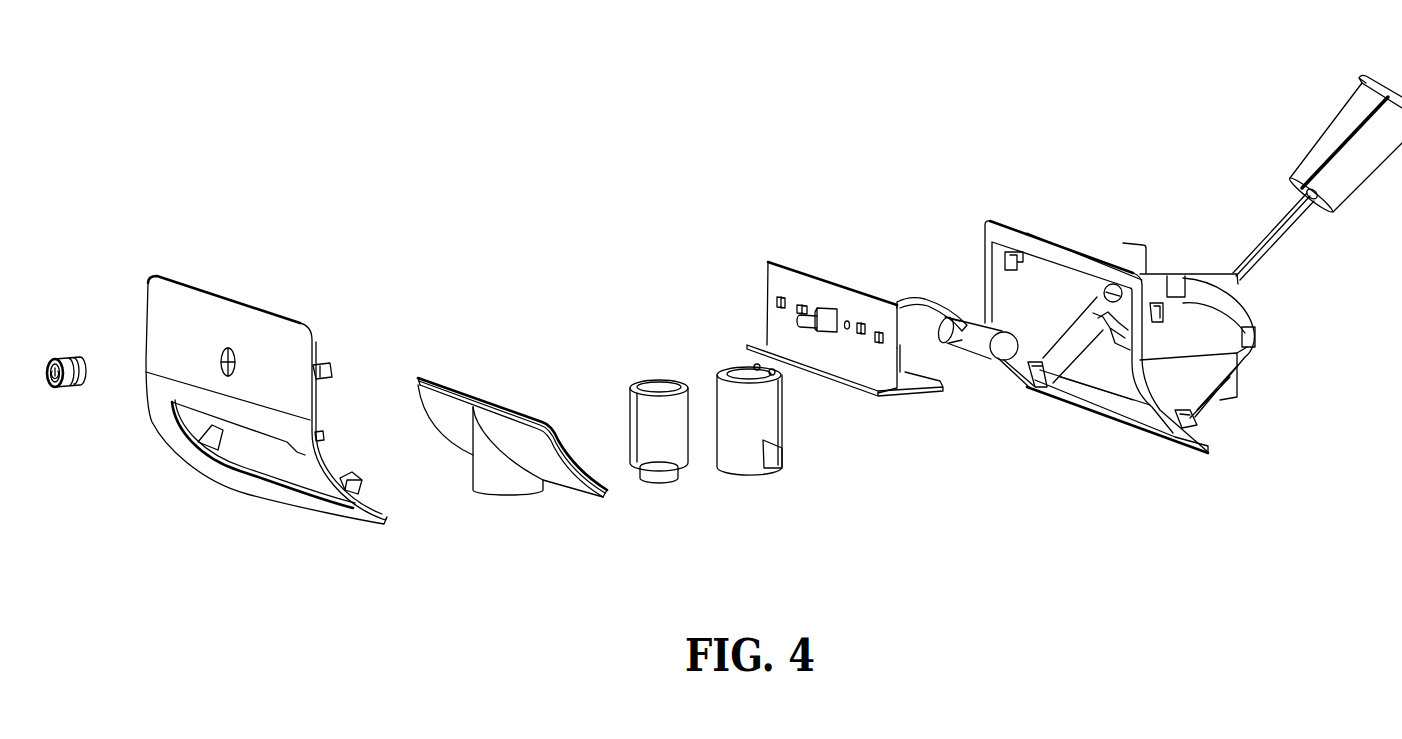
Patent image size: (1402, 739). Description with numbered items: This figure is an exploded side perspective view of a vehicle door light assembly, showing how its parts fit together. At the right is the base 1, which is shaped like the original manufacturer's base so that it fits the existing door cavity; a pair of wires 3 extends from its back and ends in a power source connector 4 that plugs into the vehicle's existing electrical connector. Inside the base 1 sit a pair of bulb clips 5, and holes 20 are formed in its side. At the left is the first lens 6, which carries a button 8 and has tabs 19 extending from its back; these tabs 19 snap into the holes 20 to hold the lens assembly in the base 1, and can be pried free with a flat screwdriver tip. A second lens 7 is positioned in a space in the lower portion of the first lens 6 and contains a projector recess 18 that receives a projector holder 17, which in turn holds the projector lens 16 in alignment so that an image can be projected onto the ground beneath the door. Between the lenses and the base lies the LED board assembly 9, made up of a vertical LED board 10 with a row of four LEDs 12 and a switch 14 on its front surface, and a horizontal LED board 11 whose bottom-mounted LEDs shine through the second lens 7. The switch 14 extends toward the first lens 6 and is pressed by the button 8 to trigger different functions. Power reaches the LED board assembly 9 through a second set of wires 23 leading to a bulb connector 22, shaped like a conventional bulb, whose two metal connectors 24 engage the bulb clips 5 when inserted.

The base 1 is at (1120, 341).
The pair of wires 3 is at (1270, 233).
The power source connector 4 is at (1335, 138).
The bulb clips 5 is at (1103, 327).
The first lens 6 is at (210, 290).
The second lens 7 is at (512, 441).
The button 8 is at (78, 357).
The LED board assembly 9 is at (828, 325).
The vertical LED board 10 is at (772, 325).
The horizontal LED board 11 is at (915, 382).
The LEDs 12 is at (800, 305).
The switch 14 is at (813, 325).
The projector lens 16 is at (660, 478).
The projector holder 17 is at (743, 465).
The projector recess 18 is at (497, 490).
The tabs 19 is at (327, 367).
The holes 20 is at (1022, 252).
The bulb connector 22 is at (977, 323).
The second set of wires 23 is at (920, 302).
The metal connectors 24 is at (998, 360).